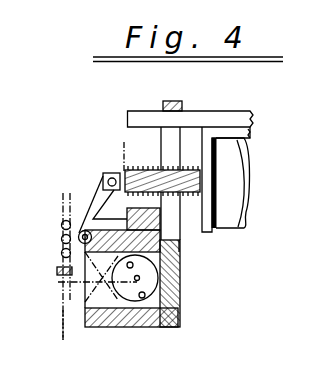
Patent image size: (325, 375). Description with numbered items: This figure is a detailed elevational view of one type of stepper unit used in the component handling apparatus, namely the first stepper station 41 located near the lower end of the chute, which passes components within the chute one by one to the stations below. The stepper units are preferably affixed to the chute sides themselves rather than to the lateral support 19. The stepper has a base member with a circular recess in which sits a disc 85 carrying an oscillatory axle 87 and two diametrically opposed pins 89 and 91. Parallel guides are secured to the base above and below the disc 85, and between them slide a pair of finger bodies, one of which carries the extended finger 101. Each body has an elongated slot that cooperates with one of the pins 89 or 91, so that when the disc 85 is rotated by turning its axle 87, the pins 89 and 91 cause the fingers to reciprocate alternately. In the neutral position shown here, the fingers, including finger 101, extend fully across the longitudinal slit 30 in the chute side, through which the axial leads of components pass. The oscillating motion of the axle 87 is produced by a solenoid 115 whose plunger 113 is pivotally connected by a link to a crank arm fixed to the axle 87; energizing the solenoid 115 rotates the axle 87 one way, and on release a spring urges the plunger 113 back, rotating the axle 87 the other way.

The stepper station 41 is at (88, 207).
The plunger 113 is at (150, 180).
The solenoid 115 is at (228, 212).
The pin 89 is at (132, 264).
The oscillatory axle 87 is at (179, 251).
The lateral support 19 is at (175, 270).
The pin 91 is at (144, 294).
The disc 85 is at (128, 294).
The finger 101 is at (57, 271).
The longitudinal slit 30 is at (63, 327).